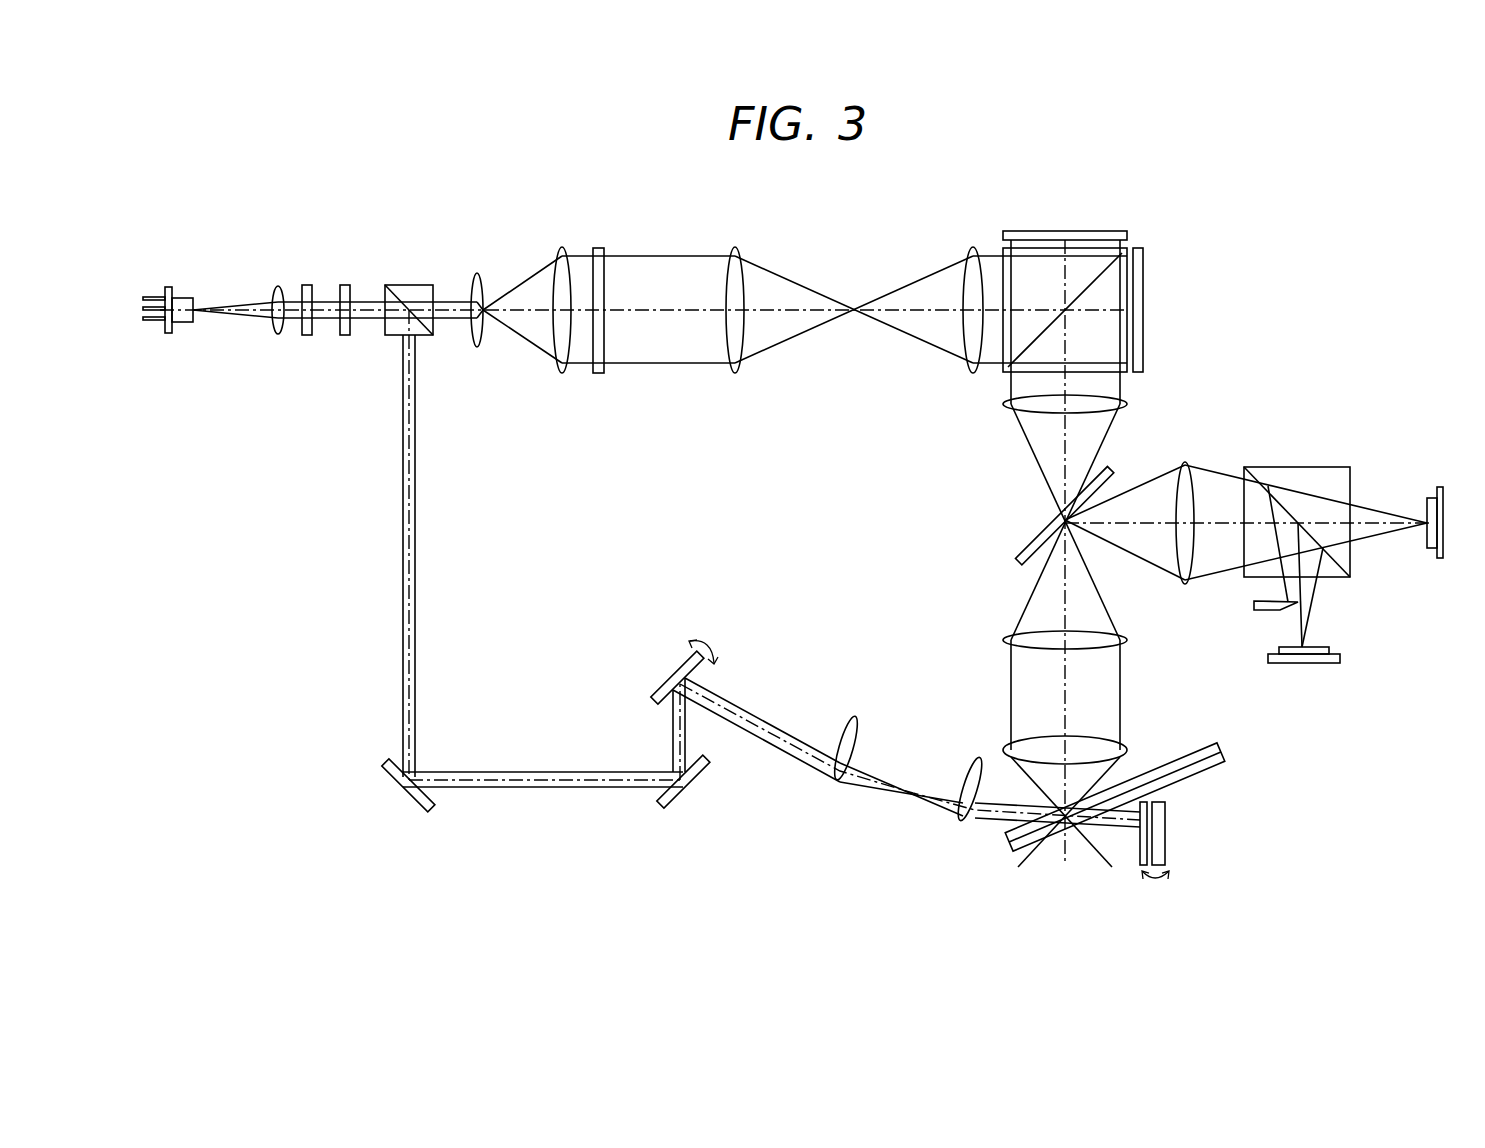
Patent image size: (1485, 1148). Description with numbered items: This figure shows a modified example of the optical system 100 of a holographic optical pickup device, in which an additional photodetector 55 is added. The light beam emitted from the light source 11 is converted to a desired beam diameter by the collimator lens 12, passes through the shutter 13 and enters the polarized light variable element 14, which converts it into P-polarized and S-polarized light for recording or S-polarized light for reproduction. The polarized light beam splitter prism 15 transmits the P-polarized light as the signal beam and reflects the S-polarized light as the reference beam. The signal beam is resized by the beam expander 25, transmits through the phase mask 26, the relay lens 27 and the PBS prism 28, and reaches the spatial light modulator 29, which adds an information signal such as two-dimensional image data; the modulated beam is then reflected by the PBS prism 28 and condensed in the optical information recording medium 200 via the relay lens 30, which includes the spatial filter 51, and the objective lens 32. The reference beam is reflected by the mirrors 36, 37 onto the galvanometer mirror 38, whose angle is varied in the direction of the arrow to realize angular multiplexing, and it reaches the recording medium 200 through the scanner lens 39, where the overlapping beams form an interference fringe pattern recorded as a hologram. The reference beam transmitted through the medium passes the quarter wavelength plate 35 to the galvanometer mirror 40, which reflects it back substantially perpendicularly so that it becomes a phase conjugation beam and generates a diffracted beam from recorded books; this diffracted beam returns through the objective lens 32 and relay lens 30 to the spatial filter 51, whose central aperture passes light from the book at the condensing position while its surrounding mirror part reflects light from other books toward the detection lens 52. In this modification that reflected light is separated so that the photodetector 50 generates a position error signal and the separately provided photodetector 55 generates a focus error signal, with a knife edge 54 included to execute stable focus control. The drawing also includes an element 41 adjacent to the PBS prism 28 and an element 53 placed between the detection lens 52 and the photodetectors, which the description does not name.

The optical system 100 is at (810, 188).
The light source 11 is at (181, 297).
The collimator lens 12 is at (277, 284).
The shutter 13 is at (307, 284).
The polarized light variable element 14 is at (344, 284).
The polarized light beam splitter prism 15 is at (406, 291).
The beam expander 25 is at (460, 245).
The phase mask 26 is at (596, 246).
The relay lens 27 is at (977, 245).
The PBS prism 28 is at (1014, 268).
The spatial light modulator 29 is at (1142, 278).
The relay lens 30 is at (1000, 400).
The objective lens 32 is at (1114, 748).
The quarter wavelength plate 35 is at (1138, 862).
The mirror 36 is at (385, 764).
The mirror 37 is at (698, 778).
The galvanometer mirror 38 is at (660, 688).
The scanner lens 39 is at (906, 787).
The galvanometer mirror 40 is at (1167, 816).
The plate 41 is at (1101, 233).
The photodetector 50 is at (1437, 493).
The spatial filter 51 is at (1112, 475).
The detection lens 52 is at (1189, 464).
The beam splitter cube 53 is at (1305, 475).
The knife edge 54 is at (1262, 607).
The photodetector 55 is at (1333, 651).
The optical information recording medium 200 is at (1221, 746).